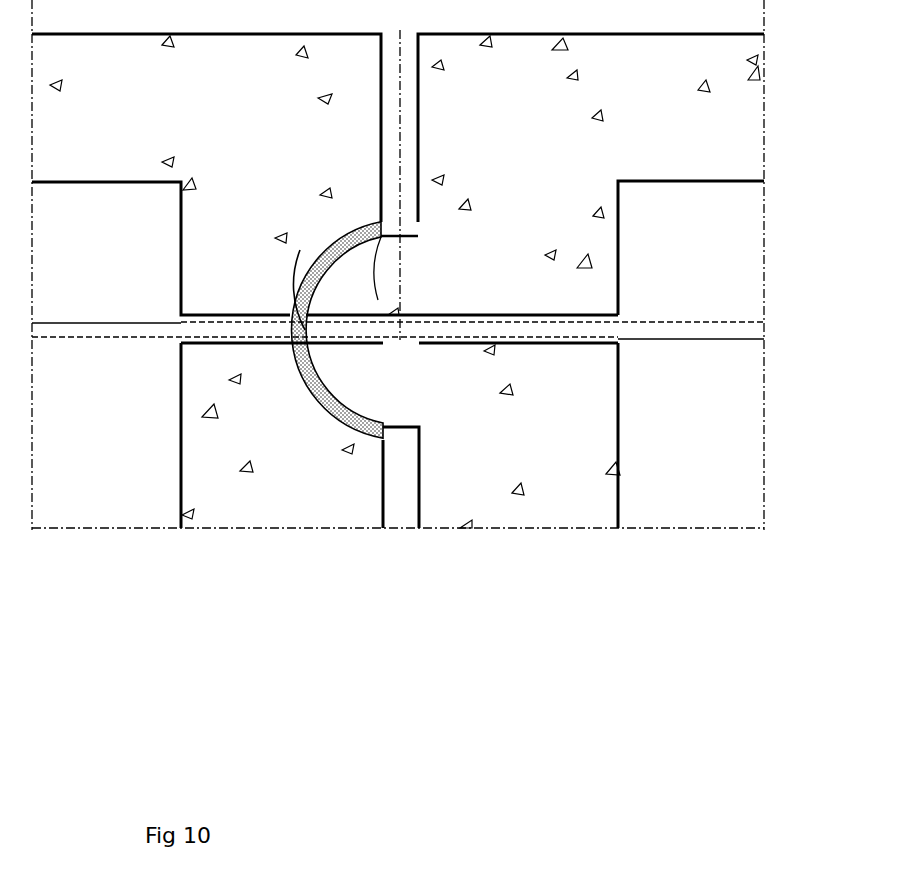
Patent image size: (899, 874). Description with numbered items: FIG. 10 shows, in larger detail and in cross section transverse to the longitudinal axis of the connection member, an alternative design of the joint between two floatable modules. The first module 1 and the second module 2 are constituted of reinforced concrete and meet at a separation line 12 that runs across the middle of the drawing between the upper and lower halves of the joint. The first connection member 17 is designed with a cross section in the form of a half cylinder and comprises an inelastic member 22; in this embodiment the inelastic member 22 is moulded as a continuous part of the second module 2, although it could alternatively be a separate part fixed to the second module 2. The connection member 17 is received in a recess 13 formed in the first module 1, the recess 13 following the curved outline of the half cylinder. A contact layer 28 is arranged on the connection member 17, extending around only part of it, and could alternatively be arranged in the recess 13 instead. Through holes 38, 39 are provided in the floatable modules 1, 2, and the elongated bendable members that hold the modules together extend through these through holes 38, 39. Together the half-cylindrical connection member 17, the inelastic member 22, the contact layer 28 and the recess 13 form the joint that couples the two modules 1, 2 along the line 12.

The first floatable module 1 is at (325, 174).
The second floatable module 2 is at (591, 174).
The separation plane / joint 12 is at (101, 331).
The recess 13 is at (318, 220).
The first connection member 17 is at (440, 240).
The inelastic member 22 is at (378, 300).
The contact layer 28 is at (303, 290).
The through hole 38 is at (642, 310).
The through hole 39 is at (177, 347).